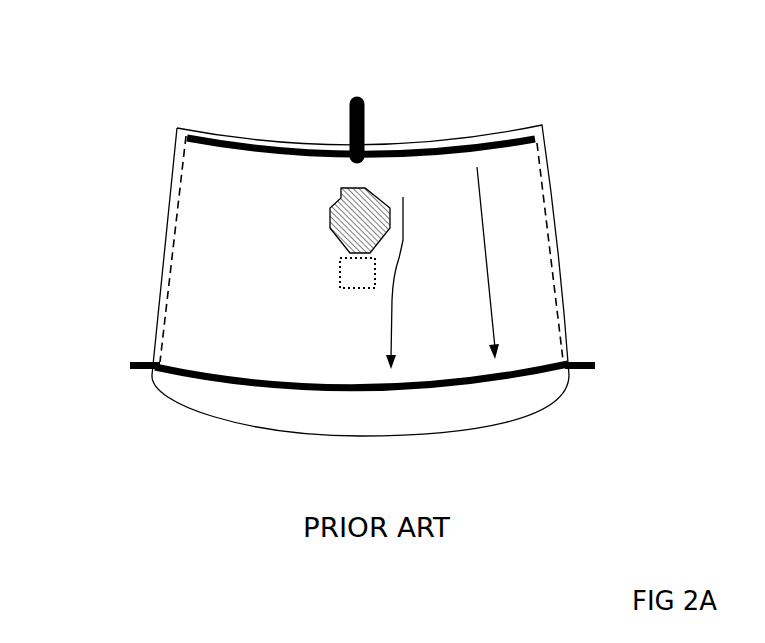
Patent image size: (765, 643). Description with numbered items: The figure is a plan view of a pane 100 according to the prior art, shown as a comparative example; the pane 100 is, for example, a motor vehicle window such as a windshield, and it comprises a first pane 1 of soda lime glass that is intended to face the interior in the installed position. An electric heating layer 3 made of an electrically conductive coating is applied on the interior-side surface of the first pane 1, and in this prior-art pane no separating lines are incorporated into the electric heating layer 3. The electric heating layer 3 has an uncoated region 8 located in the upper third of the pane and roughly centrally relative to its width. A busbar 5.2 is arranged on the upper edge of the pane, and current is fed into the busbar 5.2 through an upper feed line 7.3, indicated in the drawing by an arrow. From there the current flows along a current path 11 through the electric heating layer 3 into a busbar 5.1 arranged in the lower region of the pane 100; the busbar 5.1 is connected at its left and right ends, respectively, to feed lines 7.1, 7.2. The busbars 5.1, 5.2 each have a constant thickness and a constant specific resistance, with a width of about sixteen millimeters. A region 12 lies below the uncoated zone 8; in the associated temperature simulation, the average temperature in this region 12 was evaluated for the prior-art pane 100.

The pane 100 is at (132, 93).
The first pane 1 is at (167, 217).
The electric heating layer 3 is at (217, 247).
The busbar 5.1 is at (240, 380).
The busbar 5.2 is at (480, 147).
The feed line 7.1 is at (132, 363).
The feed line 7.2 is at (580, 363).
The connection stem 7.3 is at (362, 118).
The uncoated zone 8 is at (353, 205).
The current path 11 is at (407, 242).
The region 12 is at (342, 273).